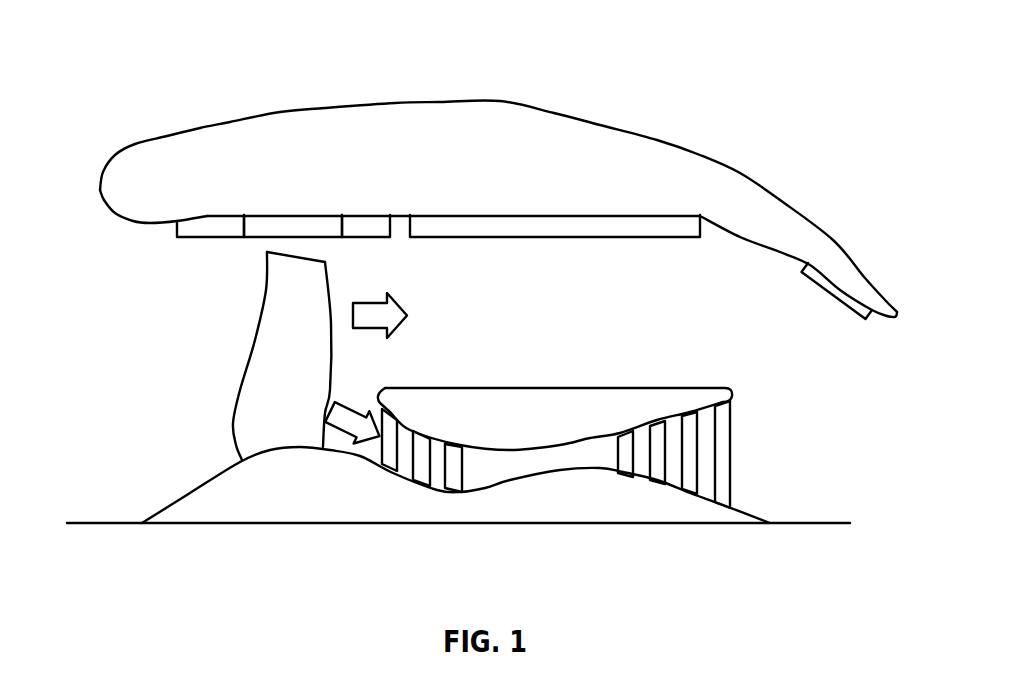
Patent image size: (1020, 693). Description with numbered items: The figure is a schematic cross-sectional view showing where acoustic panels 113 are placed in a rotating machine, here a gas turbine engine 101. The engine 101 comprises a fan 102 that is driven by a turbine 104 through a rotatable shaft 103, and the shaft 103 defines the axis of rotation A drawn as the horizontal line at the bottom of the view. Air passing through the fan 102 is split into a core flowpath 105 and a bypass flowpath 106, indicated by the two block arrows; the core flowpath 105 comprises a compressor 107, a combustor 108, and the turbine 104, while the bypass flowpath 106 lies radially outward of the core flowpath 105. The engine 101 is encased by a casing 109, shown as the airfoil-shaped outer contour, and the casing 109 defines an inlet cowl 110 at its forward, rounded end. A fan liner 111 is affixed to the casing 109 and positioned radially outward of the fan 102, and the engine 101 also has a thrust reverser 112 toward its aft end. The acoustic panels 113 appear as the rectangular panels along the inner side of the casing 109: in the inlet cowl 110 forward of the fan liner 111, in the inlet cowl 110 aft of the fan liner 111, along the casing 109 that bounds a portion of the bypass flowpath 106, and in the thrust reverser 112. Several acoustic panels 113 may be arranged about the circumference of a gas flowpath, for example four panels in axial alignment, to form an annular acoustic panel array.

The gas turbine engine 101 is at (118, 90).
The fan 102 is at (257, 365).
The rotatable shaft 103 is at (593, 471).
The turbine 104 is at (590, 484).
The core flowpath 105 is at (353, 408).
The bypass flowpath 106 is at (373, 300).
The compressor 107 is at (383, 478).
The combustor 108 is at (525, 458).
The casing 109 is at (657, 140).
The inlet cowl 110 is at (98, 227).
The fan liner 111 is at (299, 225).
The thrust reverser 112 is at (880, 243).
The acoustic panels 113 is at (207, 227).